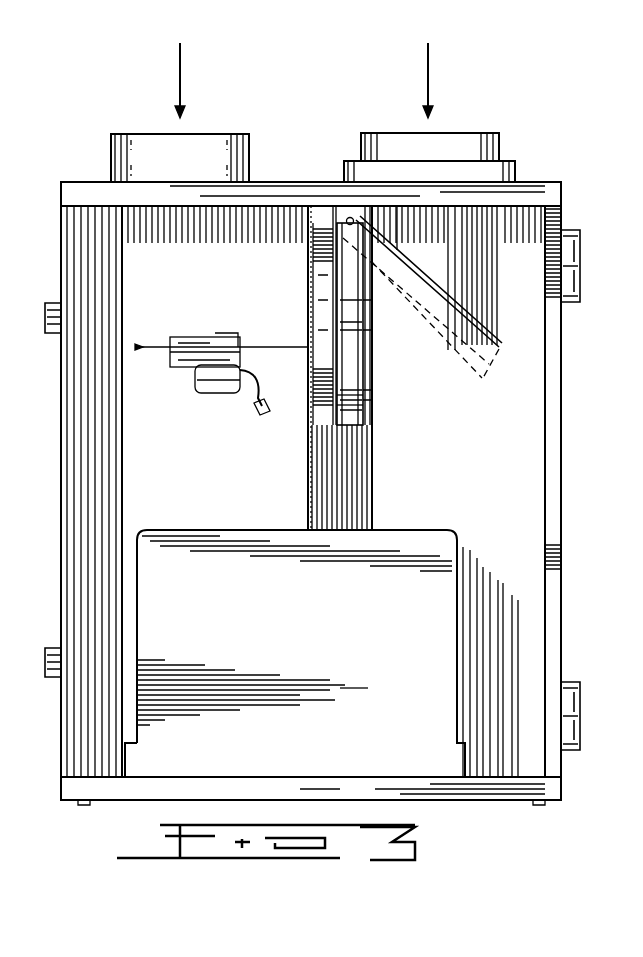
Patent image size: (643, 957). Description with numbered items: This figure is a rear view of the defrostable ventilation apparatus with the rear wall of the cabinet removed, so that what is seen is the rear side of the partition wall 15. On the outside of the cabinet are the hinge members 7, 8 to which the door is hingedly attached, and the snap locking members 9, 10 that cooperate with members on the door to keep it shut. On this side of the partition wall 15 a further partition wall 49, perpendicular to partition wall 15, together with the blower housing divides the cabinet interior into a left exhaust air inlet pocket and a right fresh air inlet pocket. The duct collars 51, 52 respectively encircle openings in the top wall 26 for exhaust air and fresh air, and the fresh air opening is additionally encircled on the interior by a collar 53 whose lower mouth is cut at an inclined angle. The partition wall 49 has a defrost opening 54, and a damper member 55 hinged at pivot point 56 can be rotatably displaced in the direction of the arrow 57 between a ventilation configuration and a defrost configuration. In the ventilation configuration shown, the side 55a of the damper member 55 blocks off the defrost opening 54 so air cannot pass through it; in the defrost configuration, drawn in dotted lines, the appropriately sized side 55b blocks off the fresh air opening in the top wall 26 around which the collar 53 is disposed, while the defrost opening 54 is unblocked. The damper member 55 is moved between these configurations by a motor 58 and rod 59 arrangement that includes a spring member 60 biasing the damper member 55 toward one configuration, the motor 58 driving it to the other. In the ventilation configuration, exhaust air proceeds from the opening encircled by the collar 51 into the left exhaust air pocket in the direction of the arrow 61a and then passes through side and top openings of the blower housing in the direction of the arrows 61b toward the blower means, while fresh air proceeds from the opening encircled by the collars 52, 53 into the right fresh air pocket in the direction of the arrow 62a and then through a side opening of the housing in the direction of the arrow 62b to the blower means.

The hinge member 7 is at (55, 318).
The hinge member 8 is at (52, 655).
The snap locking member 9 is at (580, 265).
The snap locking member 10 is at (582, 782).
The partition wall 15 is at (510, 440).
The top wall 26 is at (561, 184).
The partition wall 49 is at (308, 490).
The duct collar 51 is at (111, 150).
The duct collar 52 is at (500, 150).
The collar 53 is at (470, 272).
The defrost opening 54 is at (312, 282).
The damper member 55 is at (338, 222).
The side of damper member 55a is at (312, 410).
The side of damper member 55b is at (358, 410).
The pivot point 56 is at (350, 216).
The arrow 57 is at (442, 362).
The motor 58 is at (212, 392).
The rod 59 is at (272, 340).
The spring member 60 is at (174, 352).
The arrow 61a is at (178, 80).
The arrows 61b is at (124, 651).
The arrow 62a is at (430, 80).
The arrow 62b is at (480, 495).